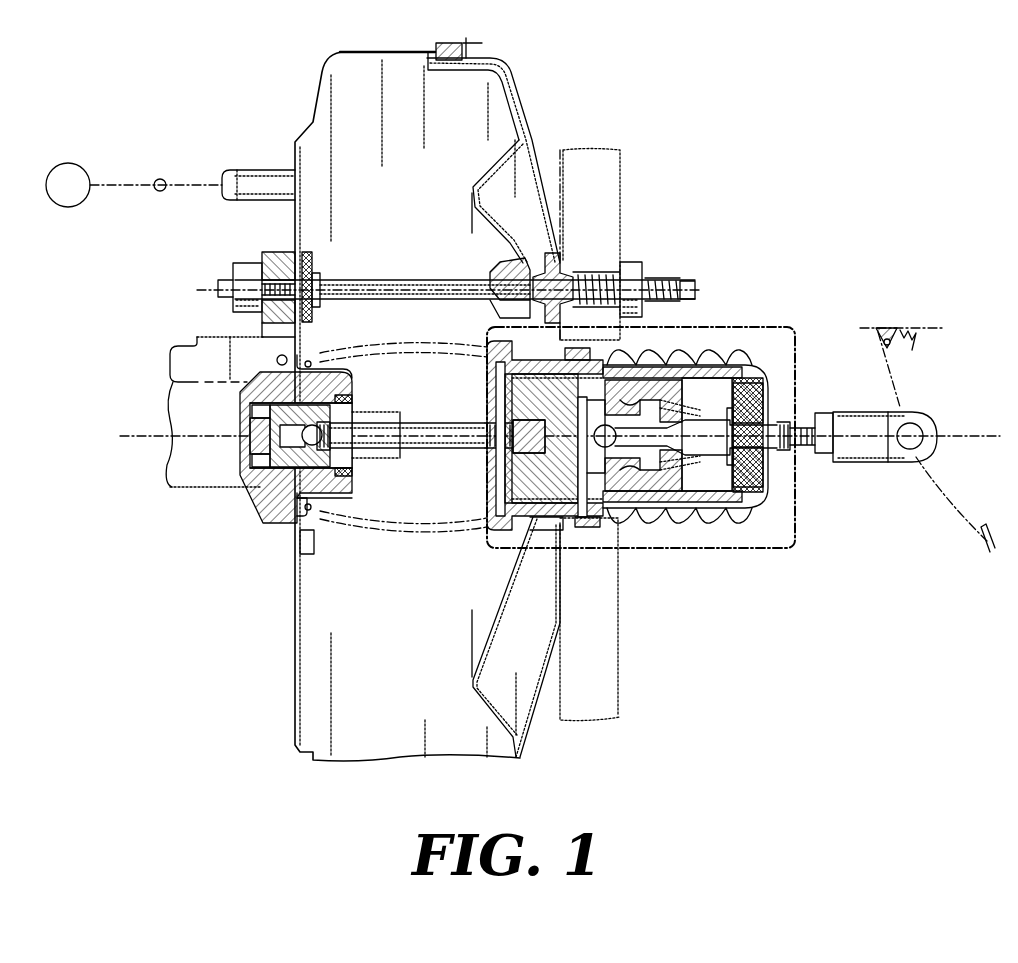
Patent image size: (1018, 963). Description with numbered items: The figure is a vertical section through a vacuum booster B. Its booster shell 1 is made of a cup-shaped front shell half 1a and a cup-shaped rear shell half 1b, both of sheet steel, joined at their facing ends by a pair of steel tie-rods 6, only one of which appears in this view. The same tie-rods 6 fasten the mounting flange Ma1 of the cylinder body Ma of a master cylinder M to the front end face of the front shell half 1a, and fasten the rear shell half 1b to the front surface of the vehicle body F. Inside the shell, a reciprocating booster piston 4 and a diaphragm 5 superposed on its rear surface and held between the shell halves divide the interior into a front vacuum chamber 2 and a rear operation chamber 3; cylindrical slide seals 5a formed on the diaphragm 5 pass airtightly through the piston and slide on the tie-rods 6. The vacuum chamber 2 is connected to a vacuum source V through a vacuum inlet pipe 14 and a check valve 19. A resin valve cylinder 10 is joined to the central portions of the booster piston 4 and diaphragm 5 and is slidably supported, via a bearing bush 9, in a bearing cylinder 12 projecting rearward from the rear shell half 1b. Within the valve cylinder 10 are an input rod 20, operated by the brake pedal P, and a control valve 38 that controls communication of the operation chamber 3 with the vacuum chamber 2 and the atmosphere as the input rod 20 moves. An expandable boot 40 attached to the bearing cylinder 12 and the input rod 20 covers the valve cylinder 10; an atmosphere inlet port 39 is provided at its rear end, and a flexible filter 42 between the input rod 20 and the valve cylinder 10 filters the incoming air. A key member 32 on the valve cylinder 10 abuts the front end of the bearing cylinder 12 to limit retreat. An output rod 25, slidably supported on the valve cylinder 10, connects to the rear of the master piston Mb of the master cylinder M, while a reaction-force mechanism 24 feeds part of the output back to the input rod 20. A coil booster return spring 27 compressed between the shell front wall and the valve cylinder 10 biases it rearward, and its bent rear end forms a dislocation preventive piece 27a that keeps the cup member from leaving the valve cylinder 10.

The vacuum booster B is at (300, 105).
The booster shell 1 is at (586, 72).
The front shell half 1a is at (400, 54).
The rear shell half 1b is at (528, 147).
The front vacuum chamber 2 is at (822, 290).
The rear operation chamber 3 is at (520, 195).
The booster piston 4 is at (487, 165).
The diaphragm 5 is at (488, 215).
The cylindrical slide seal 5a is at (492, 267).
The tie-rod 6 is at (383, 282).
The bearing bush 9 is at (588, 520).
The valve cylinder 10 is at (650, 358).
The bearing cylinder 12 is at (590, 355).
The vacuum inlet pipe 14 is at (262, 160).
The check valve 19 is at (160, 178).
The input rod 20 is at (770, 413).
The reaction-force mechanism 24 is at (487, 487).
The output rod 25 is at (423, 447).
The booster return spring 27 is at (410, 343).
The dislocation preventive piece 27a is at (487, 397).
The key member 32 is at (576, 350).
The control valve 38 is at (645, 525).
The atmosphere inlet port 39 is at (770, 386).
The expandable boot 40 is at (660, 528).
The filter 42 is at (740, 505).
The vehicle body F is at (620, 176).
The master cylinder M is at (176, 345).
The cylinder body Ma is at (207, 480).
The mounting flange Ma1 is at (278, 260).
The master piston Mb is at (243, 412).
The brake pedal P is at (945, 505).
The vacuum source V is at (68, 185).